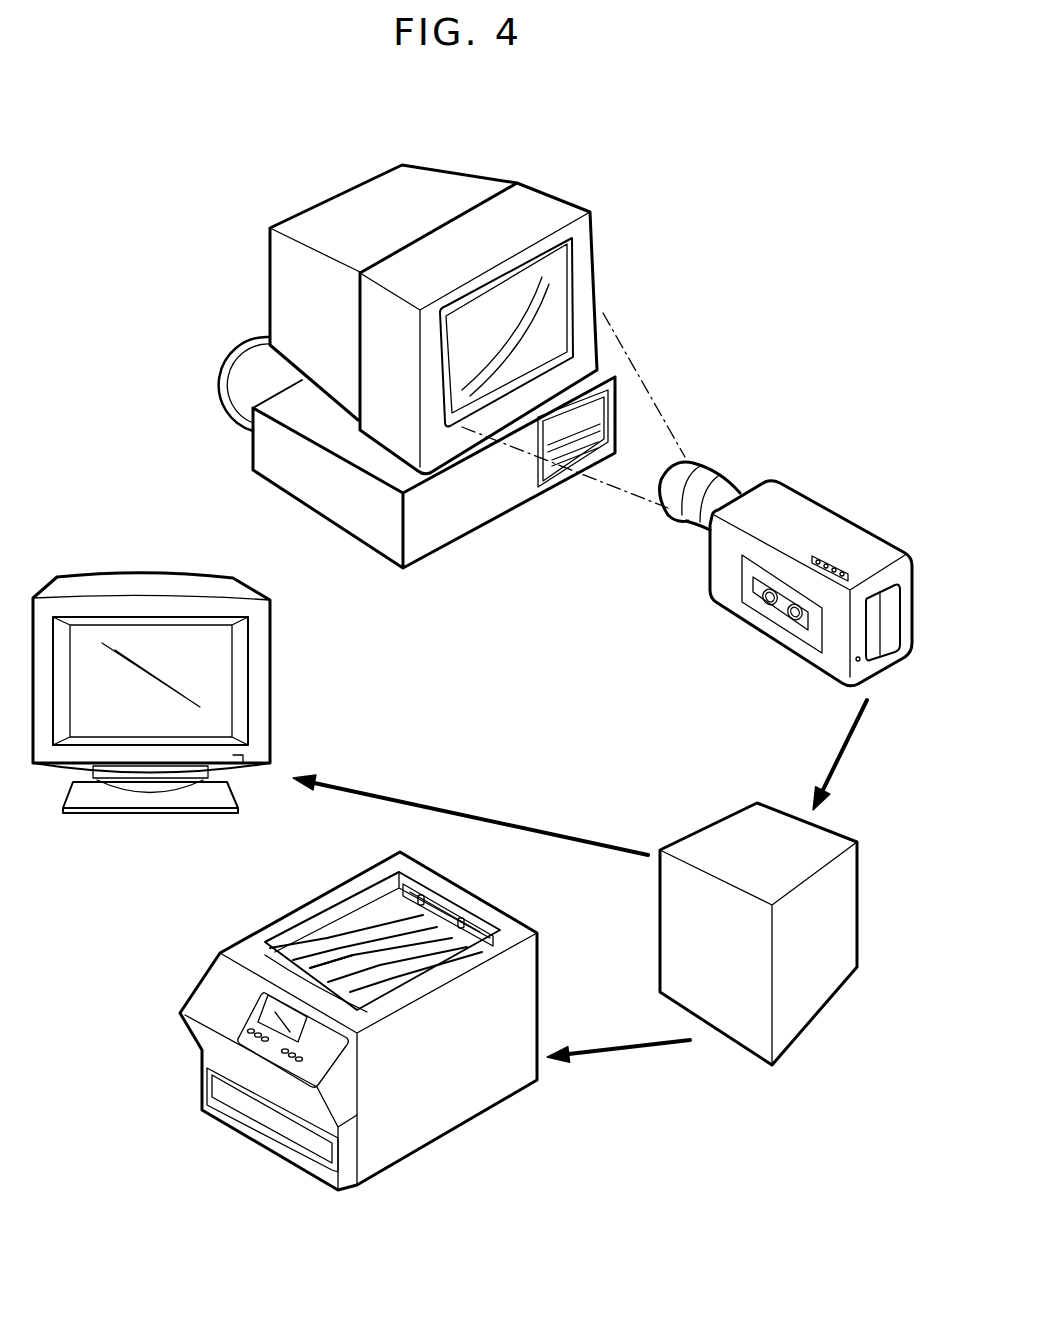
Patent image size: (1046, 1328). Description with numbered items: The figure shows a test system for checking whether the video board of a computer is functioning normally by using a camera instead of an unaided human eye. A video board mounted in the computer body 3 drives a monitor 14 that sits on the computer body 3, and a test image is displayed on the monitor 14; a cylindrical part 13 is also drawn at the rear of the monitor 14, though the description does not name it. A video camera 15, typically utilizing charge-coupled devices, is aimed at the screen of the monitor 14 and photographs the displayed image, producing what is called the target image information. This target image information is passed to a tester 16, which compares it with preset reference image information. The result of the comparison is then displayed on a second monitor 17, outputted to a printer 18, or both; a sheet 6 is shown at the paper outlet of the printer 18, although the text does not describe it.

The monitor 14 is at (280, 290).
The disk/storage cylinder 13 is at (220, 402).
The computer body 3 is at (265, 437).
The video camera 15 is at (727, 598).
The monitor 17 is at (258, 707).
The tester 16 is at (833, 923).
The printer 18 is at (467, 1092).
The printed sheet 6 is at (356, 952).